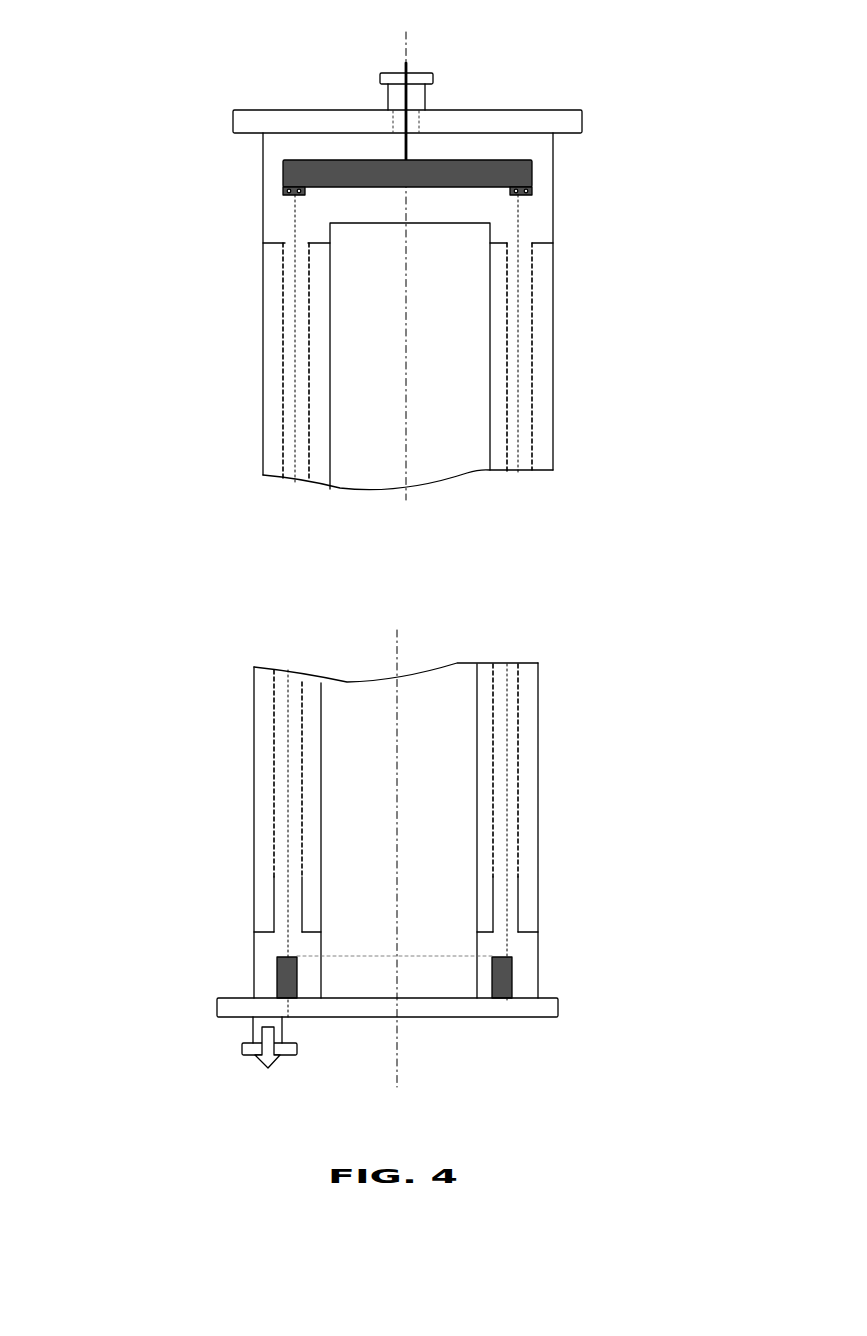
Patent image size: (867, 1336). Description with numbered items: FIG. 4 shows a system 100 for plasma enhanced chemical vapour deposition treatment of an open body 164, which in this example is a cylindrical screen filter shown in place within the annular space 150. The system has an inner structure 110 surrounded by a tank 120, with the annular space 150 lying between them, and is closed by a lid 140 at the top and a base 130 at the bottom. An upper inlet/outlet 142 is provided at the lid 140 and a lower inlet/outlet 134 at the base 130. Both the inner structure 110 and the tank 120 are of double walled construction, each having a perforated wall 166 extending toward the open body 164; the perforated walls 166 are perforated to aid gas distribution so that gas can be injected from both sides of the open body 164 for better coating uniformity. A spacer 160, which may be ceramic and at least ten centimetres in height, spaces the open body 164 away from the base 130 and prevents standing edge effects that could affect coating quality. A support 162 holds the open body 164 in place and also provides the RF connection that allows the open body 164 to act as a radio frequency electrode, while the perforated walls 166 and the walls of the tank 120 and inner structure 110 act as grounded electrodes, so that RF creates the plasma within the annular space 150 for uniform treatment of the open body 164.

The filter apparatus 100 is at (195, 383).
The inner structure 110 is at (428, 407).
The tank 120 is at (255, 758).
The base 130 is at (237, 1008).
The lower inlet/outlet 134 is at (248, 1052).
The lid 140 is at (518, 123).
The upper inlet/outlet 142 is at (430, 72).
The annular space 150 is at (287, 355).
The spacer 160 is at (515, 963).
The support 162 is at (530, 185).
The open body 164 is at (507, 797).
The perforated wall 166 is at (523, 697).